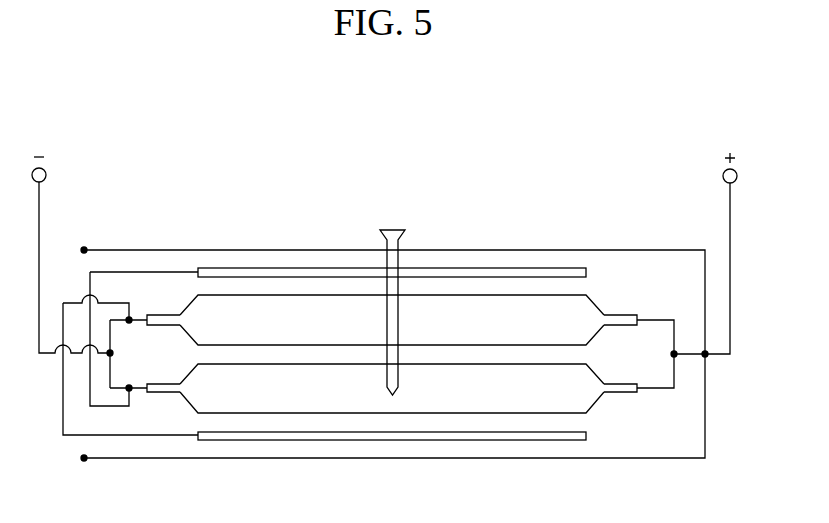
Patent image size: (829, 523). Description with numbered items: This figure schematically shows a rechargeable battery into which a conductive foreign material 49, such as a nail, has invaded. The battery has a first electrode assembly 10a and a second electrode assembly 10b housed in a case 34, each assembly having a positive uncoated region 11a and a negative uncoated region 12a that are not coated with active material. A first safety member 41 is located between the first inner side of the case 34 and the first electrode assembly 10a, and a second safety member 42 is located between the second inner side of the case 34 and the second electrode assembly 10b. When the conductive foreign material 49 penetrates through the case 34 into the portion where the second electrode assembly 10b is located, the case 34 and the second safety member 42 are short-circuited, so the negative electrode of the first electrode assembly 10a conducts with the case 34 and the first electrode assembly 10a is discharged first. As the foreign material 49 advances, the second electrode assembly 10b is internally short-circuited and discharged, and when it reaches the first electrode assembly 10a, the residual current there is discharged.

The first electrode assembly 10a is at (498, 413).
The second electrode assembly 10b is at (537, 295).
The positive uncoated region 11a is at (622, 393).
The negative uncoated region 12a is at (158, 393).
The case 34 is at (337, 458).
The first safety member 41 is at (418, 440).
The second safety member 42 is at (462, 268).
The conductive foreign material 49 is at (387, 229).